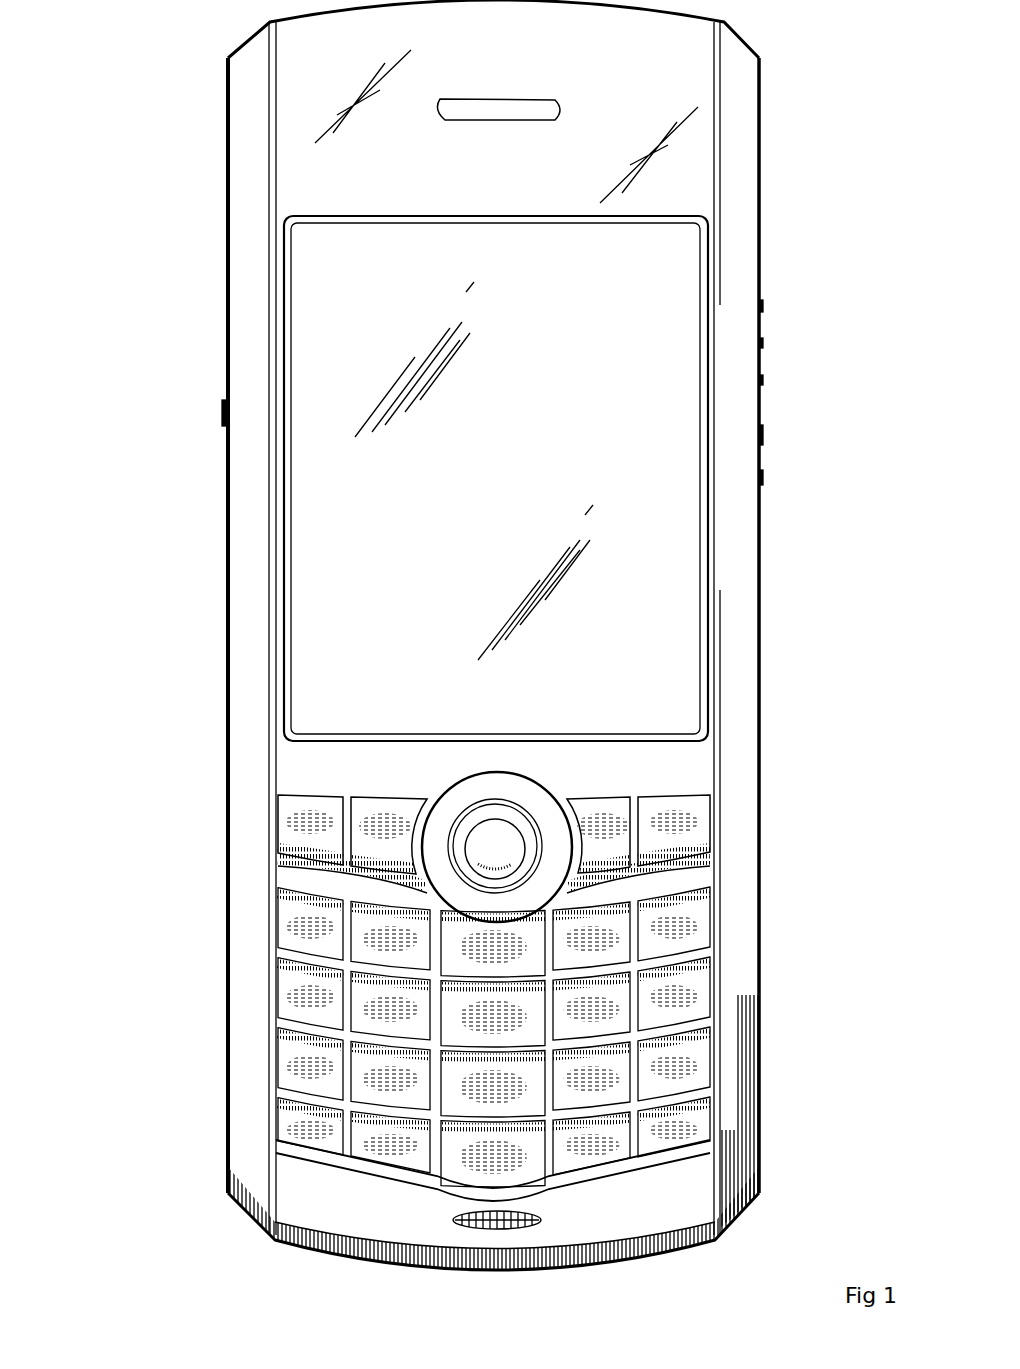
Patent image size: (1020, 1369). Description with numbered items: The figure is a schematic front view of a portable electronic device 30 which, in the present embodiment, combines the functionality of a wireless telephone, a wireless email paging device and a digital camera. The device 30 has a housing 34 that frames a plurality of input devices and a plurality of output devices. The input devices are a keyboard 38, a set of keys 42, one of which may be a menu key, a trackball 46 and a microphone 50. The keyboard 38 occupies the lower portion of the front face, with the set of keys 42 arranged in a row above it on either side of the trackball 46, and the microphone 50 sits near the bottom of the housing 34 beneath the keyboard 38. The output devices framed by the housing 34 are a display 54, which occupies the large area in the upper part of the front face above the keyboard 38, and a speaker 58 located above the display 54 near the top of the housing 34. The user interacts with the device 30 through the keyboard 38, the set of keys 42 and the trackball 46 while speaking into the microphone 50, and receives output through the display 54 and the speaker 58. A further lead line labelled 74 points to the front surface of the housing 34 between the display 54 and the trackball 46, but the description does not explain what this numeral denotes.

The portable electronic device 30 is at (171, 1212).
The housing 34 is at (222, 1030).
The keyboard 38 is at (698, 1047).
The set of keys 42 is at (345, 831).
The trackball 46 is at (496, 844).
The microphone 50 is at (496, 1230).
The display 54 is at (485, 456).
The speaker 58 is at (452, 112).
The front face of housing 74 is at (544, 777).